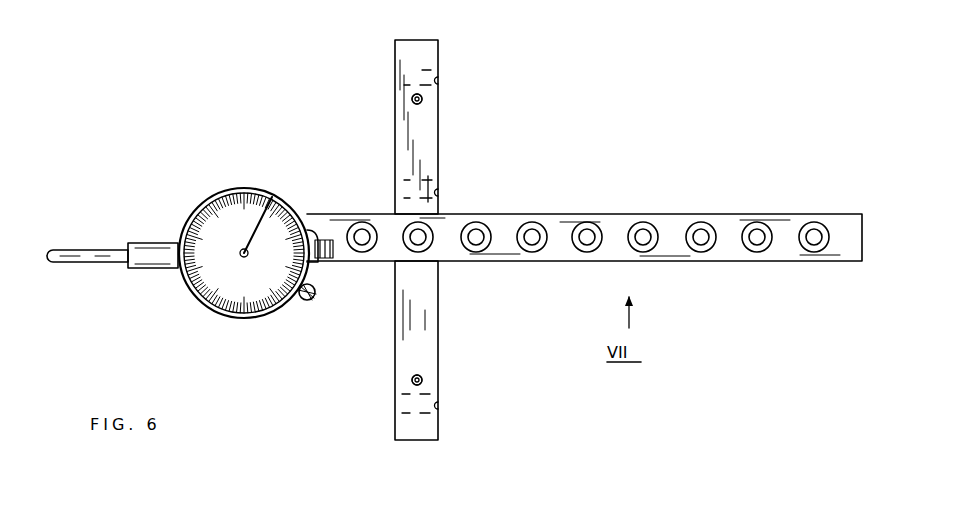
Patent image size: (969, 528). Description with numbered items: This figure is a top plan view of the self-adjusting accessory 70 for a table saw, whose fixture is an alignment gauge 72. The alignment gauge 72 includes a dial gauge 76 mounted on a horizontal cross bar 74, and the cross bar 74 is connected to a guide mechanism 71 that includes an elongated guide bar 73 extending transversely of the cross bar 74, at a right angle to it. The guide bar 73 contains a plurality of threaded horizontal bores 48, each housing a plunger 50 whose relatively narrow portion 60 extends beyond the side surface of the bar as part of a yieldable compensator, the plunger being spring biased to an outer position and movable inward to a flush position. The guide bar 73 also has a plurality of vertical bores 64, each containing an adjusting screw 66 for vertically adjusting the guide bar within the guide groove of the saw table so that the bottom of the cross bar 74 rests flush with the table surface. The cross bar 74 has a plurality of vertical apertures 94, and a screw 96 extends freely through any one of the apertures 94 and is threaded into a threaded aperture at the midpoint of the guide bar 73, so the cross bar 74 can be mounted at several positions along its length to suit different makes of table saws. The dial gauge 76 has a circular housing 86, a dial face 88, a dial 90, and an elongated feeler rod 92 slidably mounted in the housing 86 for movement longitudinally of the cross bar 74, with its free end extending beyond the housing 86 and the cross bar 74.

The horizontal bore 48 is at (407, 70).
The plunger 50 is at (455, 77).
The relatively narrow portion 60 is at (440, 78).
The vertical bore 64 is at (423, 99).
The adjusting screw 66 is at (411, 99).
The self-adjusting accessory 70 is at (547, 130).
The guide mechanism 71 is at (382, 82).
The alignment gauge 72 is at (190, 252).
The elongated guide bar 73 is at (432, 133).
The horizontal cross bar 74 is at (730, 216).
The dial gauge 76 is at (190, 252).
The circular housing 86 is at (250, 320).
The dial face 88 is at (210, 297).
The dial 90 is at (260, 220).
The elongated feeler rod 92 is at (72, 251).
The vertical apertures 94 is at (632, 222).
The screw 96 is at (425, 245).